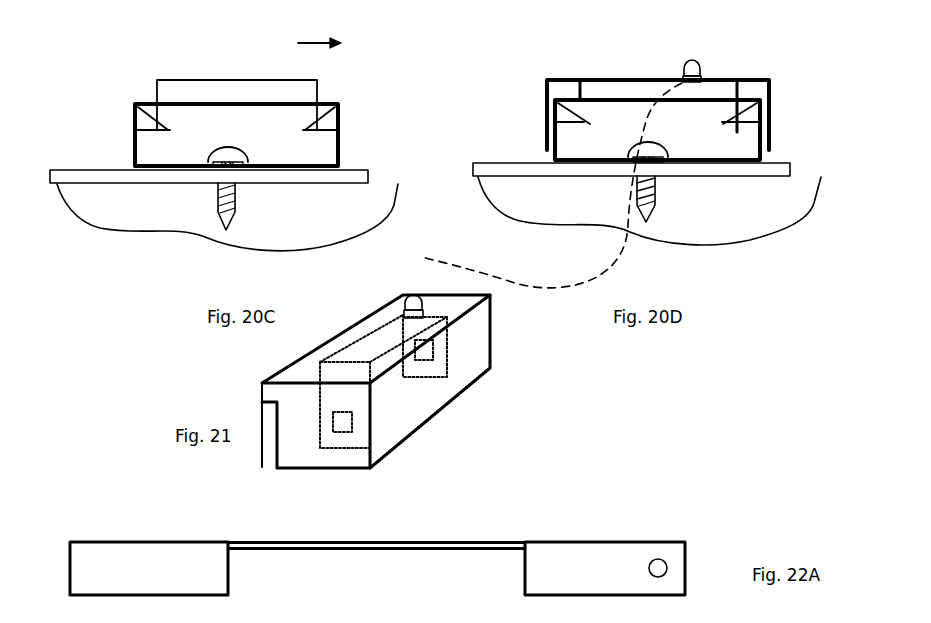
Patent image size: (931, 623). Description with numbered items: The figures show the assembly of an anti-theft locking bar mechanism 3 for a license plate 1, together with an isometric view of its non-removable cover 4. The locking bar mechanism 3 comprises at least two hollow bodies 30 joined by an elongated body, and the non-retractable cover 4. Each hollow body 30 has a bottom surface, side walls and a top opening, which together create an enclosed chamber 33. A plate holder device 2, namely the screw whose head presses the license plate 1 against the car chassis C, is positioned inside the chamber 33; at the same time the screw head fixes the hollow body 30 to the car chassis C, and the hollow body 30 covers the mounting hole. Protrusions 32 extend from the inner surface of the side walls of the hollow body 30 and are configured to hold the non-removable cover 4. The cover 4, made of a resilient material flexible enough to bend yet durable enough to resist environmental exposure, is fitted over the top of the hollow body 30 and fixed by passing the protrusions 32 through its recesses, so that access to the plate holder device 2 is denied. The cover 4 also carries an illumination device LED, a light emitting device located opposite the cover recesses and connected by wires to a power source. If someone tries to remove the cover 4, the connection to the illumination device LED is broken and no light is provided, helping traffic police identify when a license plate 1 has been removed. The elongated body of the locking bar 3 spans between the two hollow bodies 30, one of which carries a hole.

In FIG. 20C, the license plate 1 is at (353, 167).
In FIG. 20D, the license plate 1 is at (777, 163).
In FIG. 20C, the plate holder device 2 is at (231, 215).
In FIG. 20D, the plate holder device 2 is at (649, 212).
In FIG. 22A, the locking bar mechanism 3 is at (397, 541).
In FIG. 20C, the non-removable cover 4 is at (198, 97).
In FIG. 20D, the non-removable cover 4 is at (640, 95).
In FIG. 21, the non-removable cover 4 is at (376, 381).
In FIG. 20C, the hollow body 30 is at (133, 109).
In FIG. 20D, the hollow body 30 is at (553, 103).
In FIG. 22A, the hollow body 30 is at (620, 541).
In FIG. 20D, the protrusion 32 is at (772, 84).
In FIG. 20C, the chamber 33 is at (227, 177).
In FIG. 20D, the chamber 33 is at (648, 169).
In FIG. 20C, the car chassis C is at (227, 217).
In FIG. 20D, the car chassis C is at (649, 211).
In FIG. 20D, the illumination device LED is at (701, 65).
In FIG. 21, the illumination device LED is at (422, 307).